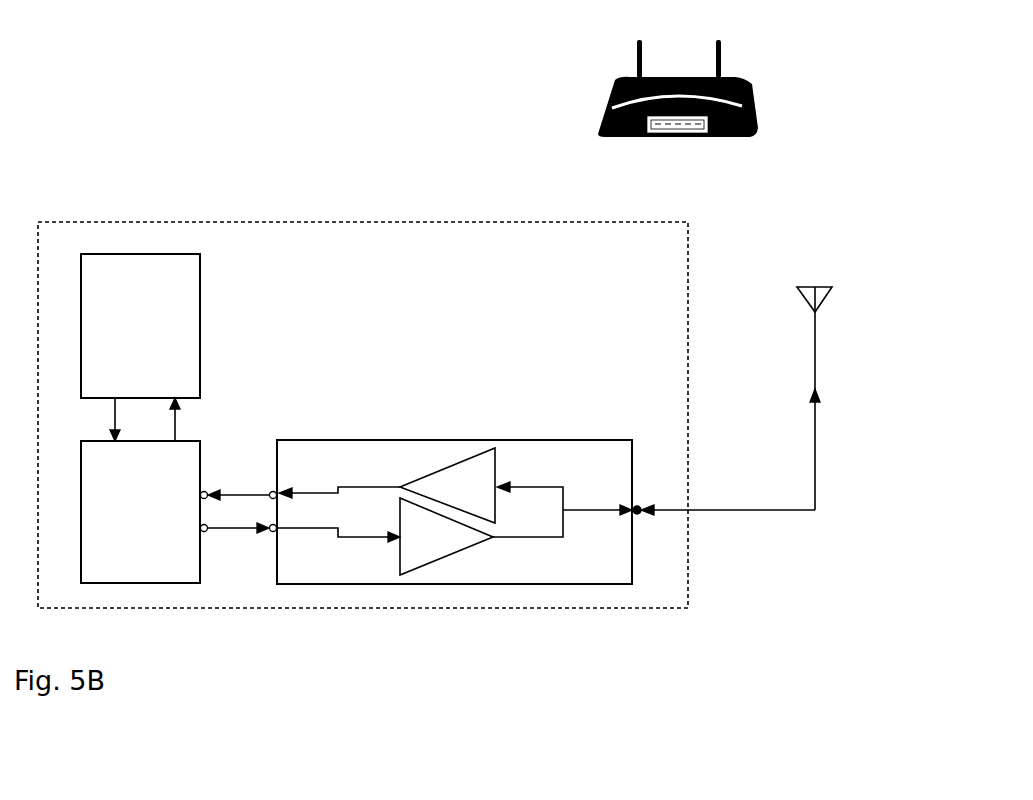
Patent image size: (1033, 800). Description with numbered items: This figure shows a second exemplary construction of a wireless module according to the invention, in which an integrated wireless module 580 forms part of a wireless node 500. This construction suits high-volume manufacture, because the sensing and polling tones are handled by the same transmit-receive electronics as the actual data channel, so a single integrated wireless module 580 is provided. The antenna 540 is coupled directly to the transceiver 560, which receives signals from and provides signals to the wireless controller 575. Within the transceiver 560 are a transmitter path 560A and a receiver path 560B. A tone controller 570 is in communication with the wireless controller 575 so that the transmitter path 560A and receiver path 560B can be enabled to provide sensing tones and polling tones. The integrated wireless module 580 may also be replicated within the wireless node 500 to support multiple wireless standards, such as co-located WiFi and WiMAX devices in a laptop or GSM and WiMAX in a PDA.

The wireless node 500 is at (635, 122).
The integrated wireless module 580 is at (363, 400).
The tone controller 570 is at (140, 326).
The wireless controller 575 is at (140, 512).
The transceiver 560 is at (454, 512).
The transmitter path 560A is at (446, 536).
The receiver path 560B is at (447, 485).
The antenna 540 is at (753, 401).